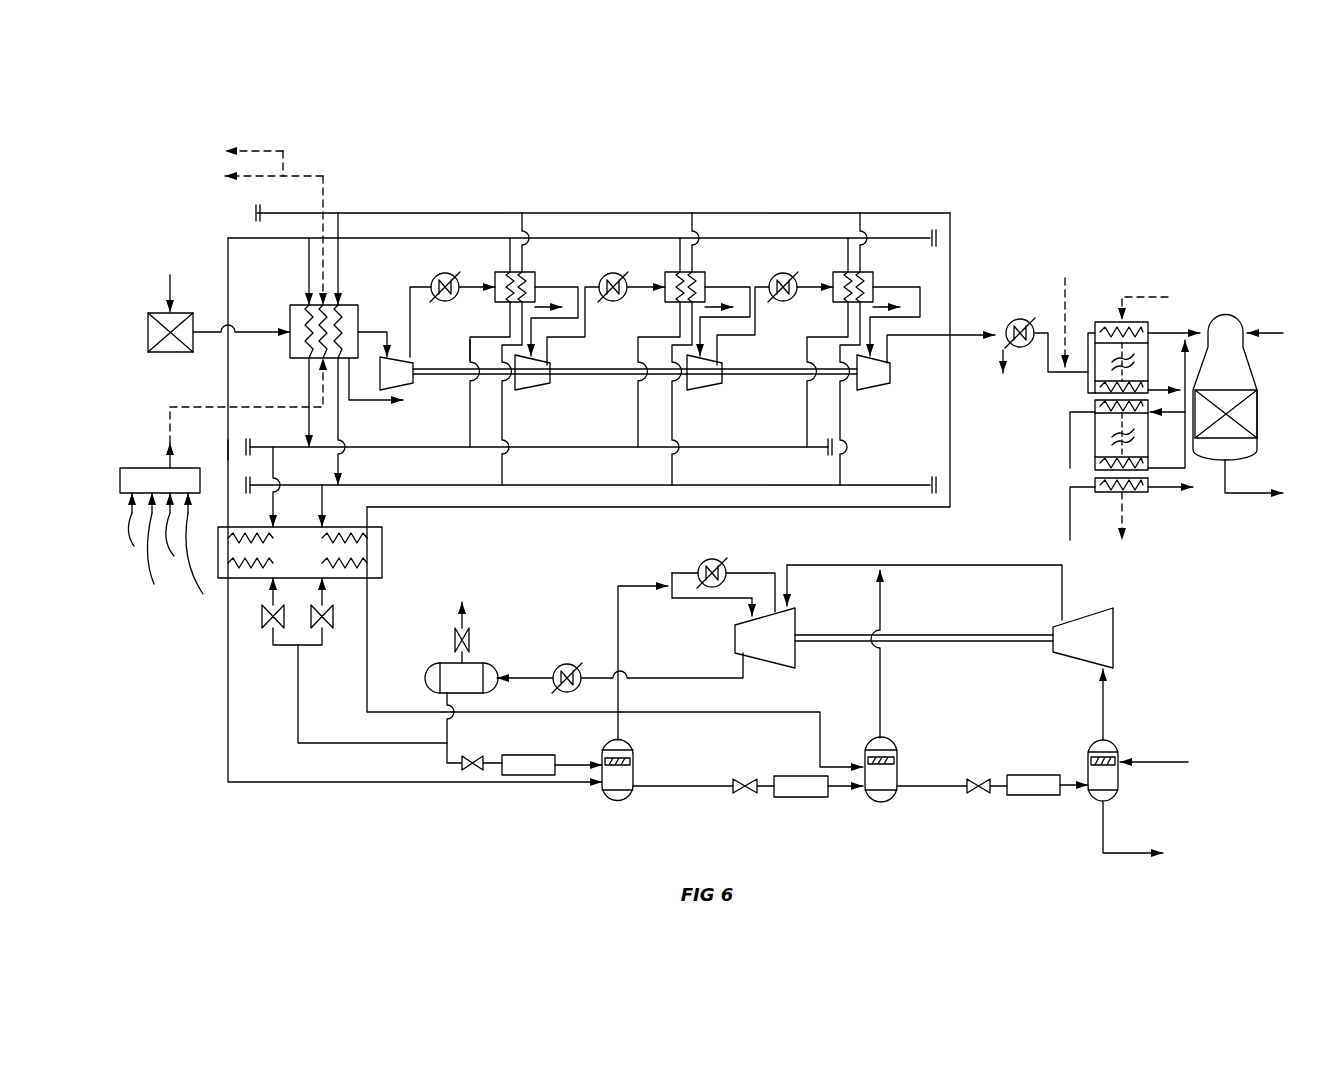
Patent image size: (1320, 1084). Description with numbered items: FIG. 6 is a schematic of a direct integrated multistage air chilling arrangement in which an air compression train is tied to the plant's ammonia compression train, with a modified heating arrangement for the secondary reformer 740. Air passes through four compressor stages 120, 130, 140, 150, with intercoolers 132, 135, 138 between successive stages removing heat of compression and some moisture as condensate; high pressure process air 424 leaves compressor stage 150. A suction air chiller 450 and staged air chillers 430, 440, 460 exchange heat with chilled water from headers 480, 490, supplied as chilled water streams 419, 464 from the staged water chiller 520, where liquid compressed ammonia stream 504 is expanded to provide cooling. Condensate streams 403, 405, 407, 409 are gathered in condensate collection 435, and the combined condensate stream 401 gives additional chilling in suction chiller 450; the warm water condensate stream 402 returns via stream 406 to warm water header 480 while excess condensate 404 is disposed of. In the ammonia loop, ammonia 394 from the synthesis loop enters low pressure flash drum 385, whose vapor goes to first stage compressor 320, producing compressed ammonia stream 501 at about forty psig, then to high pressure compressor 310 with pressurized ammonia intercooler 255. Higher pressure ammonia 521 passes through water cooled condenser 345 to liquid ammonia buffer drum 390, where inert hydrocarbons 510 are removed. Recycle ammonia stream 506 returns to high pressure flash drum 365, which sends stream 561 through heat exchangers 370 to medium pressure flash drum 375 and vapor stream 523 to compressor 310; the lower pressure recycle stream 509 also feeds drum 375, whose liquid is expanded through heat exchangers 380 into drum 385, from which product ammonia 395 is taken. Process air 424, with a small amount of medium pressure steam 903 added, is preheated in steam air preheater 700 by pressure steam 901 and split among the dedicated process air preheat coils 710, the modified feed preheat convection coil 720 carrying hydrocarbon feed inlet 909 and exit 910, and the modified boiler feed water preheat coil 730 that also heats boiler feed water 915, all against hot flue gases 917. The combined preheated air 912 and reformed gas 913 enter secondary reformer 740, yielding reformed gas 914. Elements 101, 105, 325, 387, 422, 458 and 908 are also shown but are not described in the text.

The feed gas stream 101 is at (170, 281).
The pretreatment unit 105 is at (190, 352).
The compressor stage 120 is at (413, 387).
The compressor stage 130 is at (533, 390).
The intercooler 132 is at (432, 275).
The intercooler 135 is at (600, 275).
The intercooler 138 is at (770, 275).
The compressor stage 140 is at (705, 390).
The compressor stage 150 is at (873, 390).
The pressurized ammonia intercooler 255 is at (701, 562).
The high pressure ammonia compressor 310 is at (758, 660).
The first stage ammonia compressor 320 is at (1073, 658).
The heater 325 is at (517, 775).
The water cooled condenser 345 is at (561, 665).
The high pressure ammonia flash drum 365 is at (612, 800).
The set of heat exchangers 370 is at (793, 797).
The medium pressure ammonia flash drum 375 is at (887, 800).
The set of heat exchangers 380 is at (1020, 797).
The low pressure flash drum 385 is at (1110, 803).
The vapor stream 387 is at (1103, 717).
The liquid ammonia buffer drum 390 is at (448, 662).
The ammonia from the ammonia synthesis loop 394 is at (1157, 760).
The product ammonia 395 is at (1117, 853).
The combined condensate stream 401 is at (170, 407).
The warm water condensate stream 402 is at (325, 192).
The condensate stream 403 is at (135, 530).
The excess condensate 404 is at (255, 151).
The condensate stream 405 is at (548, 309).
The stream 406 is at (250, 178).
The condensate stream 407 is at (713, 306).
The condensate stream 409 is at (881, 300).
The chilled water stream 419 is at (228, 447).
The stream 422 is at (921, 301).
The high pressure process air 424 is at (893, 337).
The air chiller 430 is at (505, 270).
The condensate collection 435 is at (155, 468).
The air chiller 440 is at (672, 270).
The suction air chiller 450 is at (358, 312).
The stream 458 is at (470, 348).
The air chiller 460 is at (840, 270).
The chilled water stream 464 is at (838, 510).
The chilled water header 480 is at (380, 447).
The chilled water header 490 is at (455, 482).
The compressed ammonia stream 501 is at (857, 563).
The liquid compressed ammonia stream 504 is at (347, 743).
The recycle ammonia stream 506 is at (228, 690).
The recycle ammonia stream 509 is at (367, 660).
The inert hydrocarbons 510 is at (468, 618).
The staged water chiller 520 is at (382, 563).
The higher pressure ammonia 521 is at (668, 678).
The stream 523 is at (616, 613).
The stream 561 is at (700, 785).
The steam air preheater 700 is at (1013, 323).
The process air preheat coils 710 is at (1112, 322).
The feed preheat convection coil 720 is at (1150, 480).
The boiler feed water preheat convection coil 730 is at (1108, 492).
The secondary reformer 740 is at (1258, 397).
The pressure steam 901 is at (1032, 320).
The medium pressure steam 903 is at (1067, 278).
The stream 908 is at (1160, 387).
The hydrocarbon feed inlet 909 is at (1070, 425).
The hydrocarbon feed exit 910 is at (1157, 413).
The preheated air 912 is at (1180, 330).
The reformed gas from the primary reformer 913 is at (1272, 328).
The reformed gas from the secondary reformer 914 is at (1250, 493).
The boiler feed water 915 is at (1070, 520).
The hot flue gases 917 is at (1142, 297).